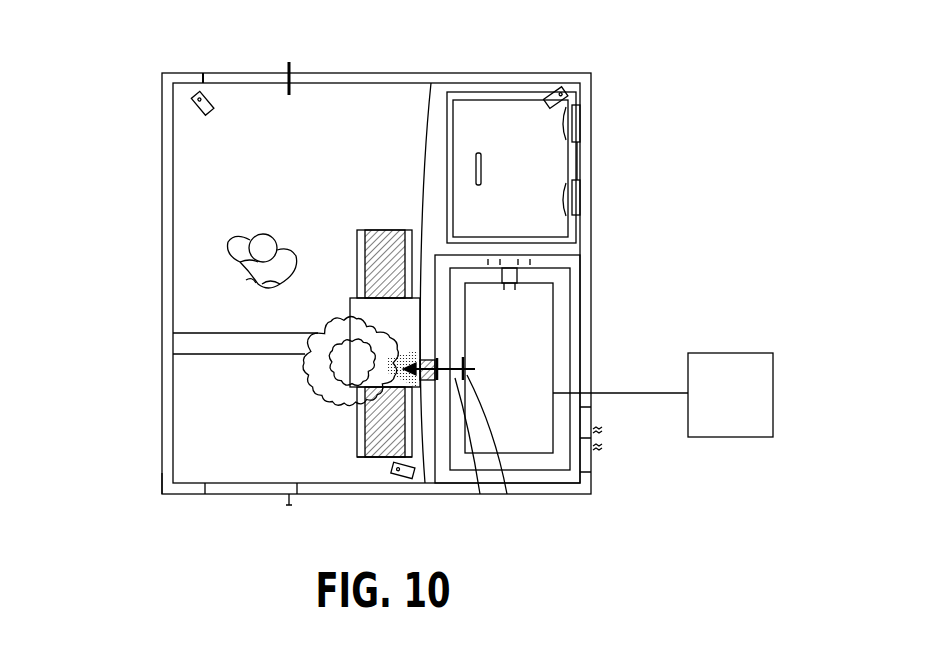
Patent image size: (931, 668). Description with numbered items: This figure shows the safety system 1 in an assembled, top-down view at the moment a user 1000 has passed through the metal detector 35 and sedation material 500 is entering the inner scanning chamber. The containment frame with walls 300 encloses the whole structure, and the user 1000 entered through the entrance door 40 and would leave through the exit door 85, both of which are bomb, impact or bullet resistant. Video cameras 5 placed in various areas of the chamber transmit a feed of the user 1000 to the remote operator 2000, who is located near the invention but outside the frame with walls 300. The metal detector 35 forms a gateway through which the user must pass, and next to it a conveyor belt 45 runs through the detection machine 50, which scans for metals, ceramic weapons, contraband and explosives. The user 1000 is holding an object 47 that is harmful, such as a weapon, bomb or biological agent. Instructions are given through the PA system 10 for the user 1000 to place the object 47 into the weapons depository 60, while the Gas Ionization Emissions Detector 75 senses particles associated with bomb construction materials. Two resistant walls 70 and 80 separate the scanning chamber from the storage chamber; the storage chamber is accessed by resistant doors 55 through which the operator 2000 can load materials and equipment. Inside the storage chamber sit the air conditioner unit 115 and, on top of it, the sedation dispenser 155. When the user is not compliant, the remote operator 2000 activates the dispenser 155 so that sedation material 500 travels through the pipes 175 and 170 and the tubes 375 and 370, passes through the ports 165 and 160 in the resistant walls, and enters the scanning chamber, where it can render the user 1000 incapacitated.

The safety system 1 is at (148, 66).
The video cameras 5 is at (192, 99).
The PA system 10 is at (577, 125).
The metal detector 35 is at (250, 338).
The entrance door 40 is at (250, 488).
The conveyor belt 45 is at (377, 458).
The object 47 is at (250, 285).
The detection machine 50 is at (363, 280).
The resistant doors 55 is at (598, 458).
The weapons depository 60 is at (527, 177).
The resistant wall 70 is at (431, 73).
The Gas Ionization Emissions Detector 75 is at (577, 197).
The resistant wall 80 is at (553, 262).
The exit door 85 is at (250, 72).
The air conditioner unit 115 is at (537, 462).
The sedation dispenser 155 is at (535, 365).
The port 160 is at (523, 262).
The port 165 is at (425, 494).
The pipe 170 is at (512, 284).
The pipe 175 is at (507, 494).
The frame with walls 300 is at (162, 494).
The pipe 370 is at (520, 265).
The pipe 375 is at (480, 494).
The sedation material 500 is at (330, 397).
The user 1000 is at (227, 248).
The remote operator 2000 is at (706, 407).